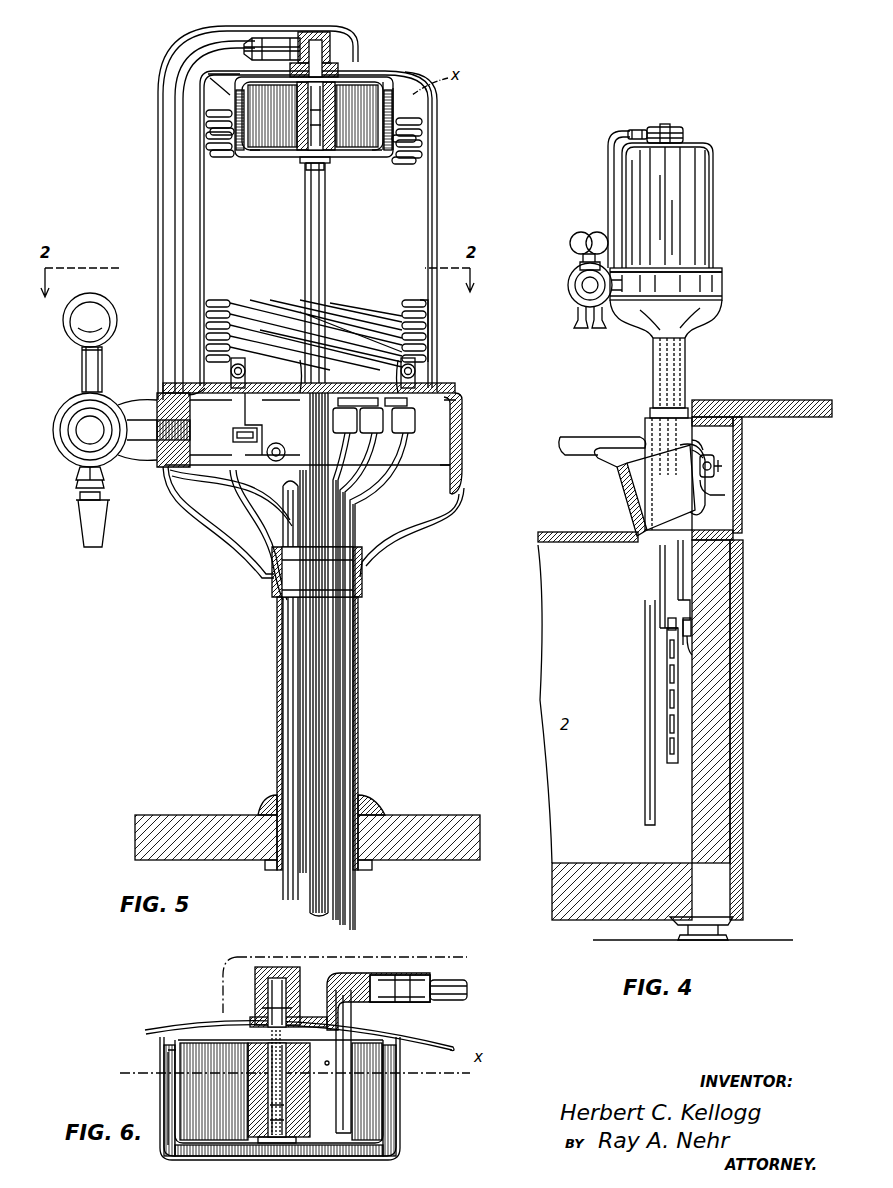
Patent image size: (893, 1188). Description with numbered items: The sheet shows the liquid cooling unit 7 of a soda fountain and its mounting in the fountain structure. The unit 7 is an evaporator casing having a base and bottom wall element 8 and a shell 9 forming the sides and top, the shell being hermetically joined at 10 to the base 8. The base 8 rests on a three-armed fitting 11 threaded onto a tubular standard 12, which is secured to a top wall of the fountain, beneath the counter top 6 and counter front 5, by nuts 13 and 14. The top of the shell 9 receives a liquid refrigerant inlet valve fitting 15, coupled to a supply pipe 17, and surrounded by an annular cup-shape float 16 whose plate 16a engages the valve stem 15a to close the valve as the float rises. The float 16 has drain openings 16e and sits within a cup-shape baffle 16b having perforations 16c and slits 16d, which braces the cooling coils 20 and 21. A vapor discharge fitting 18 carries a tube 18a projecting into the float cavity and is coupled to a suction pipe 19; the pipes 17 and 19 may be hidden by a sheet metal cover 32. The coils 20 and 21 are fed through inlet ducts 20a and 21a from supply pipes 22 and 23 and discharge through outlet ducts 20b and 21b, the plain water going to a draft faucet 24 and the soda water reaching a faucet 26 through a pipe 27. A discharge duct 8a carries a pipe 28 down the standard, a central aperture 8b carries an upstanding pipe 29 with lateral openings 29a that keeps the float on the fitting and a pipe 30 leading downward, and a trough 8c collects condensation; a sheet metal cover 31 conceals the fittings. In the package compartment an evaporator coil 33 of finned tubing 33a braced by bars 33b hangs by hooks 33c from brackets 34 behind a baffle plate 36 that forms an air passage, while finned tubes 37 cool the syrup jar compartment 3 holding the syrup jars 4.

In FIG. 4, the compartment 3 is at (725, 524).
In FIG. 4, the syrup jar 4 is at (633, 490).
In FIG. 4, the counter front 5 is at (744, 720).
In FIG. 4, the counter top 6 is at (780, 402).
In FIG. 5, the cooling unit 7 is at (439, 194).
In FIG. 4, the cooling unit 7 is at (716, 195).
In FIG. 6, the cooling unit 7 is at (166, 1022).
In FIG. 5, the base and bottom wall element 8 is at (458, 412).
In FIG. 4, the base and bottom wall element 8 is at (723, 283).
In FIG. 5, the discharge duct 8a is at (370, 362).
In FIG. 5, the central aperture 8b is at (333, 356).
In FIG. 5, the trough 8c is at (440, 398).
In FIG. 5, the shell 9 is at (434, 138).
In FIG. 4, the shell 9 is at (715, 220).
In FIG. 6, the shell 9 is at (186, 1030).
In FIG. 5, the hermetic joint 10 is at (432, 386).
In FIG. 4, the hermetic joint 10 is at (714, 270).
In FIG. 5, the three-armed fitting 11 is at (256, 560).
In FIG. 5, the tubular standard 12 is at (277, 692).
In FIG. 4, the tubular standard 12 is at (688, 360).
In FIG. 5, the nut 13 is at (264, 800).
In FIG. 4, the nut 13 is at (655, 413).
In FIG. 5, the nut 14 is at (268, 868).
In FIG. 5, the liquid refrigerant inlet valve fitting 15 is at (332, 48).
In FIG. 4, the liquid refrigerant inlet valve fitting 15 is at (680, 128).
In FIG. 6, the liquid refrigerant inlet valve fitting 15 is at (256, 985).
In FIG. 5, the stem 15a is at (328, 160).
In FIG. 6, the stem 15a is at (290, 1145).
In FIG. 5, the float 16 is at (376, 106).
In FIG. 6, the float 16 is at (384, 1111).
In FIG. 5, the plate 16a is at (246, 72).
In FIG. 6, the plate 16a is at (258, 1148).
In FIG. 5, the cup-shape baffle 16b is at (222, 96).
In FIG. 6, the cup-shape baffle 16b is at (160, 1090).
In FIG. 5, the perforations 16c is at (252, 158).
In FIG. 5, the slits 16d is at (422, 116).
In FIG. 5, the drain openings 16e is at (394, 102).
In FIG. 6, the drain openings 16e is at (327, 1060).
In FIG. 5, the liquid refrigerant supply pipe 17 is at (160, 196).
In FIG. 4, the refrigerant vapor discharge fitting 18 is at (654, 128).
In FIG. 6, the refrigerant vapor discharge fitting 18 is at (362, 975).
In FIG. 6, the tube 18a is at (352, 1085).
In FIG. 5, the refrigerant vapor discharge pipe 19 is at (295, 876).
In FIG. 4, the refrigerant vapor discharge pipe 19 is at (615, 200).
In FIG. 6, the refrigerant vapor discharge pipe 19 is at (455, 986).
In FIG. 5, the cooling coil 20 is at (232, 130).
In FIG. 5, the inlet duct 20a is at (418, 344).
In FIG. 5, the outlet duct 20b is at (196, 378).
In FIG. 5, the cooling coil 21 is at (232, 113).
In FIG. 5, the inlet duct 21a is at (409, 384).
In FIG. 5, the outlet duct 21b is at (310, 332).
In FIG. 5, the supply pipe 22 is at (395, 482).
In FIG. 5, the supply pipe 23 is at (368, 505).
In FIG. 5, the draft faucet 24 is at (70, 405).
In FIG. 4, the draft faucet 24 is at (570, 284).
In FIG. 4, the draft faucet 26 is at (572, 296).
In FIG. 5, the pipe 27 is at (245, 488).
In FIG. 5, the pipe 28 is at (378, 530).
In FIG. 6, the pipe 28 is at (345, 973).
In FIG. 5, the upstanding pipe 29 is at (326, 226).
In FIG. 5, the lateral openings 29a is at (312, 180).
In FIG. 5, the pipe 30 is at (320, 610).
In FIG. 6, the pipe 30 is at (276, 1082).
In FIG. 5, the sheet metal cover member 31 is at (448, 506).
In FIG. 4, the sheet metal cover member 31 is at (720, 310).
In FIG. 5, the sheet metal cover 32 is at (158, 115).
In FIG. 4, the sheet metal cover 32 is at (607, 160).
In FIG. 4, the evaporator coil 33 is at (667, 676).
In FIG. 4, the finned tubing 33a is at (667, 722).
In FIG. 4, the bars 33b is at (680, 735).
In FIG. 4, the hooks 33c is at (668, 634).
In FIG. 4, the brackets 34 is at (692, 648).
In FIG. 4, the baffle plate 36 is at (648, 740).
In FIG. 4, the finned tubes 37 is at (740, 470).